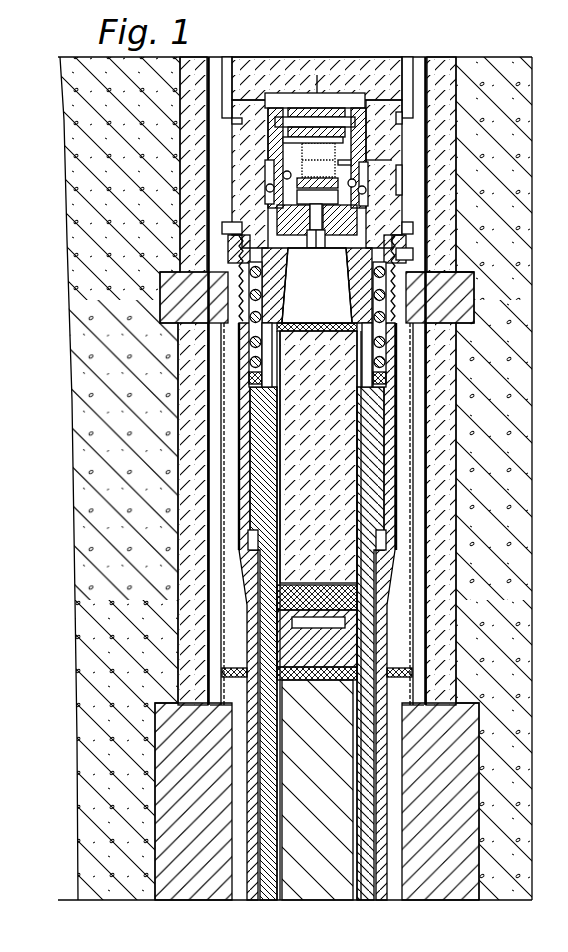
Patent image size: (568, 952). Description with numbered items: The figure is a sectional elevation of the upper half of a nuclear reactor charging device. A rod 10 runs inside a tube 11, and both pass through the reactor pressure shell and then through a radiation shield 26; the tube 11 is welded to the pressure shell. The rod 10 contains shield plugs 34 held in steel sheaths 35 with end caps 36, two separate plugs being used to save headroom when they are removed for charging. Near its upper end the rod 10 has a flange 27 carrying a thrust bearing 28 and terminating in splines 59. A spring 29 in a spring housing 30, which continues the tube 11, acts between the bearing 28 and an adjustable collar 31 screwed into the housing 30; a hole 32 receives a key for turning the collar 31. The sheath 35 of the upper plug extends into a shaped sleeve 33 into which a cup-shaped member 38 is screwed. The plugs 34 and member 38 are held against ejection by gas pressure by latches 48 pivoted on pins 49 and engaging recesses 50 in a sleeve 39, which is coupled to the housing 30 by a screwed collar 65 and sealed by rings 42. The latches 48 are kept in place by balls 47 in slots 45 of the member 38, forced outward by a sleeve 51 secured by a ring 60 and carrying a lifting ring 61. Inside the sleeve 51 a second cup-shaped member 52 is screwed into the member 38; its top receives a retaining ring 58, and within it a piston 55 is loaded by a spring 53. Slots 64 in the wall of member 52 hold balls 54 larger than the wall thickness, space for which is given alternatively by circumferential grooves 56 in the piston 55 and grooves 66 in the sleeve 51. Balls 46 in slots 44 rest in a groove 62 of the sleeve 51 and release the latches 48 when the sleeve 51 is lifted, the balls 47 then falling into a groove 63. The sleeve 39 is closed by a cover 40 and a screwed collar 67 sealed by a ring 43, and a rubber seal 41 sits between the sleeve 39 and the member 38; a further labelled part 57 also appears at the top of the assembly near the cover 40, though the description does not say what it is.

The rod 10 is at (268, 704).
The tube 11 is at (236, 676).
The radiation shield 26 is at (72, 70).
The flange 27 is at (380, 452).
The thrust bearing 28 is at (383, 378).
The spring 29 is at (396, 320).
The spring housing 30 is at (392, 356).
The adjustable collar 31 is at (440, 276).
The hole 32 is at (408, 253).
The shaped sleeve 33 is at (284, 304).
The shield plugs 34 is at (343, 406).
The steel sheaths 35 is at (360, 430).
The end caps 36 is at (330, 640).
The cup-shaped member 38 is at (284, 178).
The sleeve 39 is at (402, 118).
The cover 40 is at (383, 72).
The rubber seal 41 is at (317, 274).
The rings 42 is at (413, 237).
The ring 43 is at (246, 84).
The slots 44 is at (292, 280).
The slots 45 is at (400, 180).
The balls 46 is at (338, 285).
The balls 47 is at (366, 182).
The latches 48 is at (356, 168).
The pins 49 is at (366, 190).
The recesses 50 is at (268, 186).
The sleeve 51 is at (330, 118).
The second cup-shaped member 52 is at (304, 285).
The spring 53 is at (318, 160).
The balls 54 is at (285, 142).
The piston 55 is at (340, 162).
The circumferential grooves 56 is at (385, 160).
The chamber 57 is at (312, 110).
The retaining ring 58 is at (320, 143).
The splines 59 is at (388, 300).
The ring 60 is at (282, 118).
The lifting ring 61 is at (303, 150).
The groove 62 is at (238, 226).
The groove 63 is at (350, 196).
The slots 64 is at (318, 169).
The screwed collar 65 is at (262, 300).
The grooves 66 is at (268, 165).
The screwed collar 67 is at (407, 68).